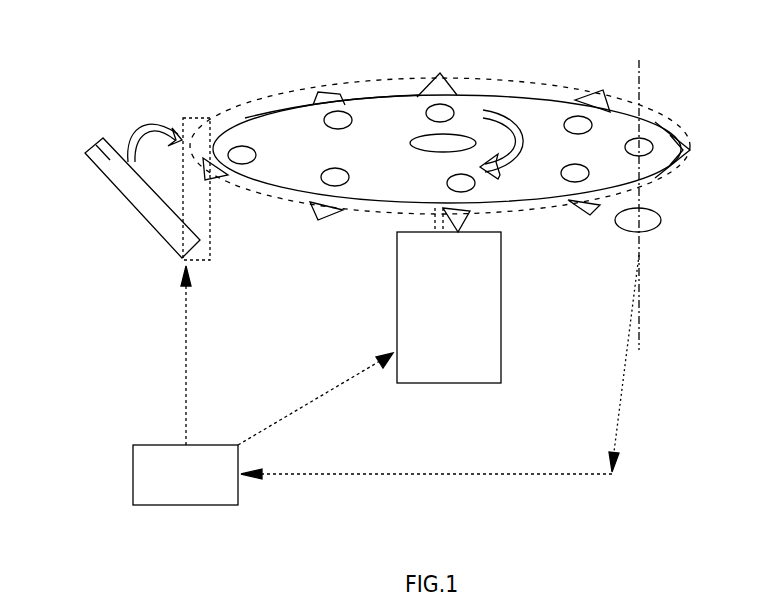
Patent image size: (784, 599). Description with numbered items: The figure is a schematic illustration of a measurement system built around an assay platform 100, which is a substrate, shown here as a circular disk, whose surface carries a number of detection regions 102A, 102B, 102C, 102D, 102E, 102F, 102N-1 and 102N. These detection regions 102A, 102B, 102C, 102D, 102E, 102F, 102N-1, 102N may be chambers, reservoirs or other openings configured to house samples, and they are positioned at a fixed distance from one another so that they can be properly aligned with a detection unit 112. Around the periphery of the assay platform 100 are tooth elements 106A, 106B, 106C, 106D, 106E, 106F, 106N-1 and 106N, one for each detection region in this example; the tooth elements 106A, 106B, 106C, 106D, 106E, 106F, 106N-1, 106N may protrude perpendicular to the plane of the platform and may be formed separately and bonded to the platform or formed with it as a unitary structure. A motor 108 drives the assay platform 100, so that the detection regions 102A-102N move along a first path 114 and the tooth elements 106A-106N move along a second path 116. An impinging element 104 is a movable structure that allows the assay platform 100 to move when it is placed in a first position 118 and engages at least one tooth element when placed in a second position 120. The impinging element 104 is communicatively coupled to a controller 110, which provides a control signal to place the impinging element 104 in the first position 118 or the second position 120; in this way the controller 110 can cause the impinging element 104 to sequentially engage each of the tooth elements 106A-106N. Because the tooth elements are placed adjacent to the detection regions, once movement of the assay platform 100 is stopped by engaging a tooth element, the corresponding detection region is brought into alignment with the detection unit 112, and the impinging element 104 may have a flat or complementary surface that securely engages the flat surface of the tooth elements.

The assay platform 100 is at (543, 132).
The detection region 102A is at (256, 155).
The detection region 102B is at (343, 171).
The detection region 102C is at (450, 178).
The detection region 102D is at (589, 175).
The detection region 102E is at (652, 142).
The detection region 102F is at (578, 134).
The detection region 102N is at (352, 122).
The detection region 102N-1 is at (452, 106).
The impinging element 104 is at (175, 250).
The tooth element 106A is at (205, 172).
The tooth element 106B is at (318, 220).
The tooth element 106C is at (462, 213).
The tooth element 106D is at (590, 214).
The tooth element 106E is at (690, 150).
The tooth element 106F is at (603, 92).
The tooth element 106N is at (327, 96).
The tooth element 106N-1 is at (433, 80).
The motor 108 is at (452, 352).
The controller 110 is at (145, 478).
The detection unit 112 is at (650, 228).
The first path 114 is at (277, 128).
The second path 116 is at (370, 80).
The first position 118 is at (85, 140).
The second position 120 is at (197, 118).